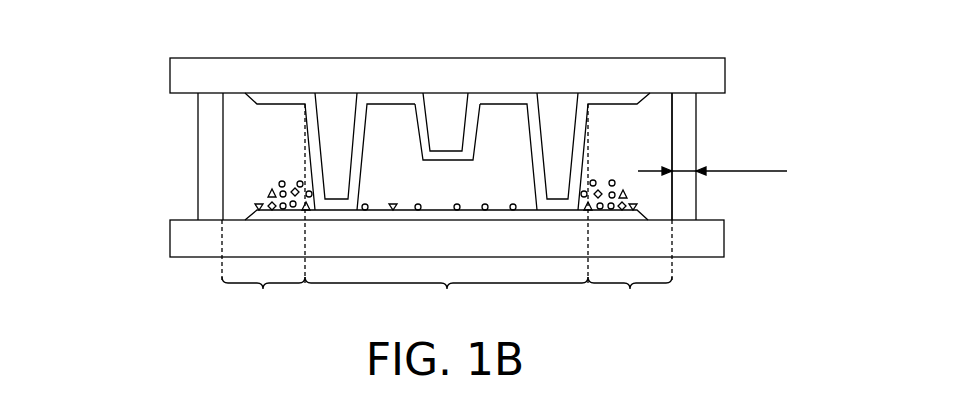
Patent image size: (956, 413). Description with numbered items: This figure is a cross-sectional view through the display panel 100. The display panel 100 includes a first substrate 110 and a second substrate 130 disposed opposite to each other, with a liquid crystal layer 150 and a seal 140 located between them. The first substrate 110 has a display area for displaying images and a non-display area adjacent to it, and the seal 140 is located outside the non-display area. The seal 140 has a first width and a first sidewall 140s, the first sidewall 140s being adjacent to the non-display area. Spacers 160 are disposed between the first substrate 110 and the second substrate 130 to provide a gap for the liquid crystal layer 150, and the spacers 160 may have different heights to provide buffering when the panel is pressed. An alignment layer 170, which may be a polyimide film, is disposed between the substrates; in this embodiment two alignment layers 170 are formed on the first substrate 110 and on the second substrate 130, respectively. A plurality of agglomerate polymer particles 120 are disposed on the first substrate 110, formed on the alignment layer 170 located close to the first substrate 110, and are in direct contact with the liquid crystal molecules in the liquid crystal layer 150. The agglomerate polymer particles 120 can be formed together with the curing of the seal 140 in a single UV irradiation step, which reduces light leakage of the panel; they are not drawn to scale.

The display panel 100 is at (73, 28).
The first substrate 110 is at (715, 246).
The agglomerate polymer particles 120 is at (638, 207).
The second substrate 130 is at (713, 78).
The seal 140 is at (212, 107).
The first sidewall 140s is at (678, 108).
The liquid crystal layer 150 is at (267, 118).
The spacers 160 is at (335, 118).
The alignment layer 170 is at (388, 98).